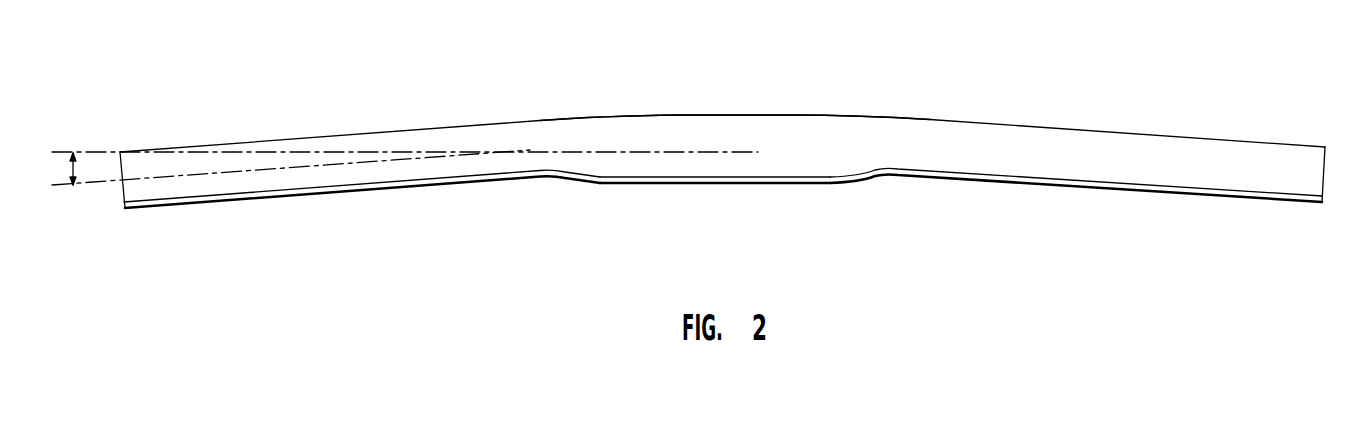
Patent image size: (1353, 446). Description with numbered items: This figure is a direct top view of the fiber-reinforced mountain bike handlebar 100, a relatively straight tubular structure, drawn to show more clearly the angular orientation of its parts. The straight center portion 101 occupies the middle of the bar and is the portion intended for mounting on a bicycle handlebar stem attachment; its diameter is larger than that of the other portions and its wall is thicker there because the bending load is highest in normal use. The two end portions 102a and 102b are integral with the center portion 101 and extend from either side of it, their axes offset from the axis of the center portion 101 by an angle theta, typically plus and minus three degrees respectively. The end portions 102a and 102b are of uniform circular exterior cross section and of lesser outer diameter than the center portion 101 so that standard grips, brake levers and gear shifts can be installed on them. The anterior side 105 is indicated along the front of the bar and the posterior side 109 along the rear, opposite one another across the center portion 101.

The fiber-reinforced mountain bike handlebar 100 is at (337, 120).
The center portion 101 is at (675, 125).
The end portion 102a is at (232, 187).
The end portion 102b is at (1167, 173).
The anterior side 105 is at (917, 52).
The posterior side 109 is at (917, 202).